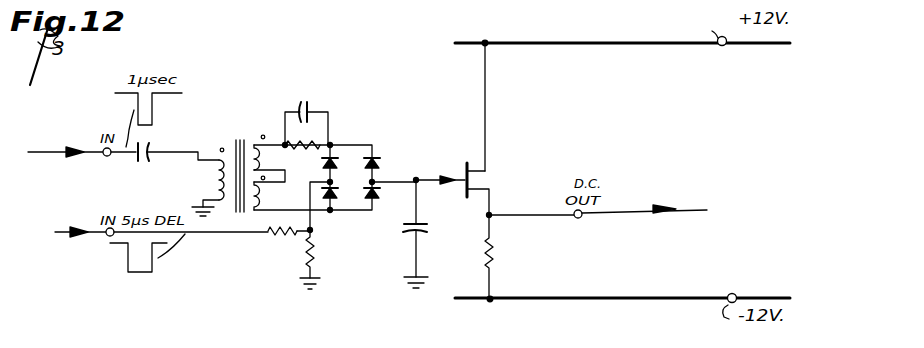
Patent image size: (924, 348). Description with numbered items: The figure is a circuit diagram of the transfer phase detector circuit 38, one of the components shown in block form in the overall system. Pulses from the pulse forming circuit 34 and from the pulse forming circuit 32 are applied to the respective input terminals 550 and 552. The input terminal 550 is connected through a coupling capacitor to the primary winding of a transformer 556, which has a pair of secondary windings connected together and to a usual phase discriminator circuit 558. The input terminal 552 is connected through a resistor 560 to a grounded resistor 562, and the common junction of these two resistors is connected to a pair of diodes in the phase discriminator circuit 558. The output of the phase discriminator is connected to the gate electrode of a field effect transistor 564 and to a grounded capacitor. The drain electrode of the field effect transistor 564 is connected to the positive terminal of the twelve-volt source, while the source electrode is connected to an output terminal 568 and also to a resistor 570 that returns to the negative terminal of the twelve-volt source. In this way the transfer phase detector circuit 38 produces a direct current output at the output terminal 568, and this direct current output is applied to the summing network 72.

The input terminal 550 is at (103, 148).
The input terminal 552 is at (103, 236).
The transformer 556 is at (244, 130).
The phase discriminator circuit 558 is at (347, 155).
The resistor 560 is at (291, 239).
The grounded resistor 562 is at (313, 253).
The field effect transistor 564 is at (466, 166).
The output terminal 568 is at (574, 218).
The resistor 570 is at (487, 248).
The pulse forming circuit 32 is at (138, 284).
The pulse forming circuit 34 is at (104, 173).
The transfer phase detector circuit 38 is at (300, 18).
The summing network 72 is at (697, 211).